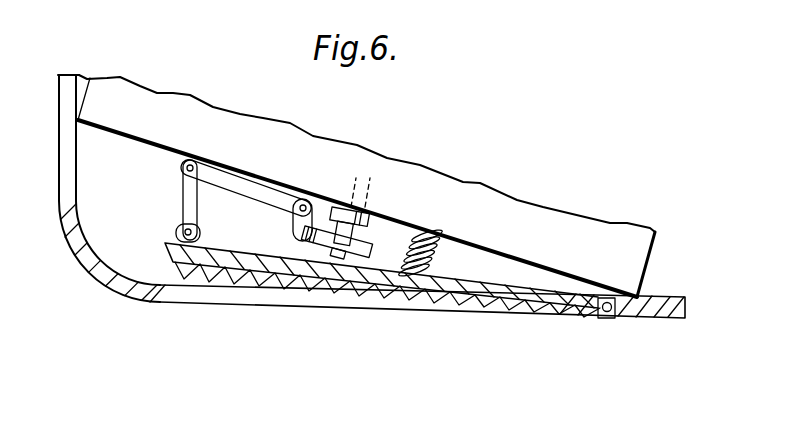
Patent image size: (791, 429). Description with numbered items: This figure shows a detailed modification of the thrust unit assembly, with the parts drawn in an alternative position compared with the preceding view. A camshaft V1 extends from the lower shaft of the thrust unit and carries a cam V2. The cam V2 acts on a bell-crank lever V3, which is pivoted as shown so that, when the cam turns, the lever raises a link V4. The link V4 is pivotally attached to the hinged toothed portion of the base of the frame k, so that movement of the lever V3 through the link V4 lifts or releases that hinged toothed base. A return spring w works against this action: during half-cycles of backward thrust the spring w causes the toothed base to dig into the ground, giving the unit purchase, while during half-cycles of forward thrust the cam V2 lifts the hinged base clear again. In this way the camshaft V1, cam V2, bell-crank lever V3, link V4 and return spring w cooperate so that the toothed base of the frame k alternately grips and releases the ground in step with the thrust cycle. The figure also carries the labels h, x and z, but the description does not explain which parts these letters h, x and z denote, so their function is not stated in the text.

The hinged plate h is at (641, 263).
The frame k is at (95, 274).
The toothed base x is at (523, 298).
The pivot pin z is at (600, 318).
The camshaft V1 is at (365, 236).
The cam V2 is at (326, 252).
The bell-crank lever V3 is at (284, 204).
The link V4 is at (184, 211).
The return spring w is at (437, 265).